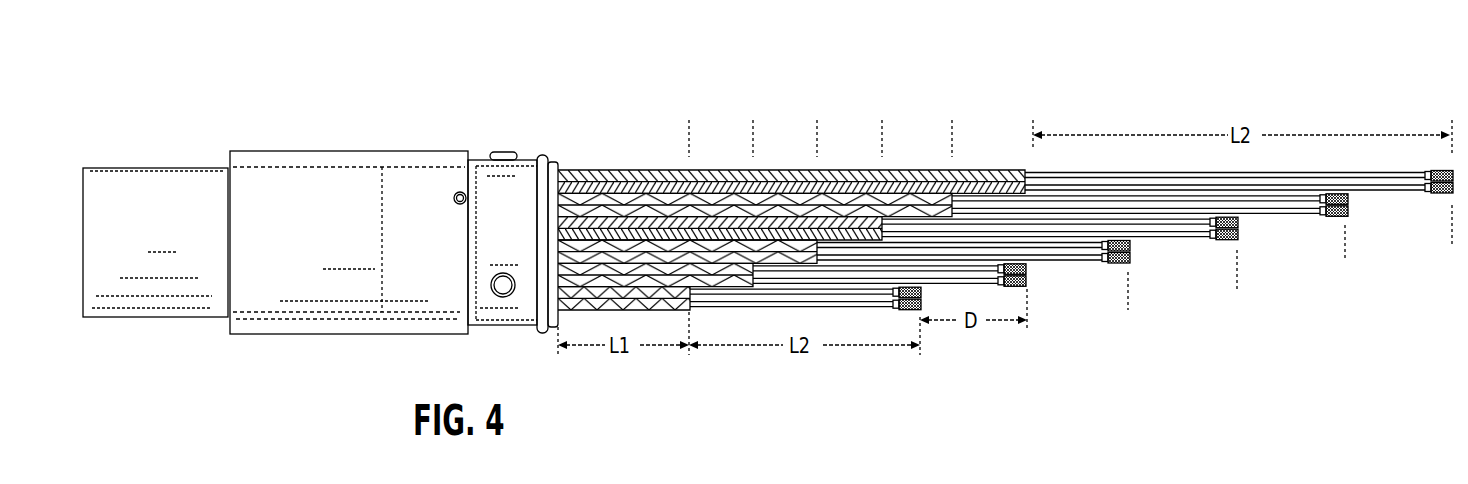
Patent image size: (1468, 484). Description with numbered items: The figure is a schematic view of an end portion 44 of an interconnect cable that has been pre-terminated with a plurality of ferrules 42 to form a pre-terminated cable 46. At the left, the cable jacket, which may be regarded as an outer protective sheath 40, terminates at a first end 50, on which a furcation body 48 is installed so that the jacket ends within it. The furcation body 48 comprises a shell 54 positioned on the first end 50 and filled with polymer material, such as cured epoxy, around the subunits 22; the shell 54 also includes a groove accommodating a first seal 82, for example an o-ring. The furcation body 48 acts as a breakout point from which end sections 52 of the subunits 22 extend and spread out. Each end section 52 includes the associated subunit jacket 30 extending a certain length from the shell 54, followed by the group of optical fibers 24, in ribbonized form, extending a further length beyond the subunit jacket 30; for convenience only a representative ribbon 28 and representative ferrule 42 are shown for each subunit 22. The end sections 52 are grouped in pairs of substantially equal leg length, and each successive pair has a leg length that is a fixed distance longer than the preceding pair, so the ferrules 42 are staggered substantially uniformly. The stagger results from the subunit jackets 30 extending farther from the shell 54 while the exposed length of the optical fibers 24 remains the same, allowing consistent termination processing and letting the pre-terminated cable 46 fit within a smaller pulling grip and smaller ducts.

The outer protective sheath 40 is at (163, 168).
The furcation body 48 is at (349, 233).
The shell 54 is at (358, 151).
The first end 50 is at (380, 286).
The pre-terminated cable 46 is at (507, 180).
The first seal 82 is at (540, 158).
The subunits 22 is at (791, 180).
The end sections 52 is at (663, 160).
The subunit jacket 30 is at (675, 170).
The end portion 44 is at (1071, 192).
The ferrules 42 is at (1131, 259).
The optical fibers 24 is at (964, 297).
The ribbon 28 is at (1073, 261).